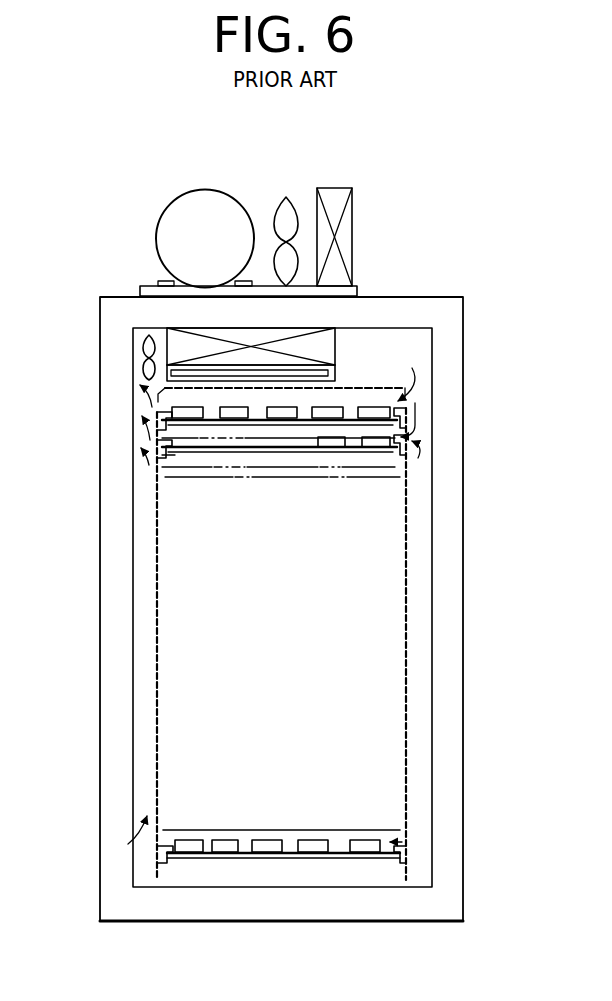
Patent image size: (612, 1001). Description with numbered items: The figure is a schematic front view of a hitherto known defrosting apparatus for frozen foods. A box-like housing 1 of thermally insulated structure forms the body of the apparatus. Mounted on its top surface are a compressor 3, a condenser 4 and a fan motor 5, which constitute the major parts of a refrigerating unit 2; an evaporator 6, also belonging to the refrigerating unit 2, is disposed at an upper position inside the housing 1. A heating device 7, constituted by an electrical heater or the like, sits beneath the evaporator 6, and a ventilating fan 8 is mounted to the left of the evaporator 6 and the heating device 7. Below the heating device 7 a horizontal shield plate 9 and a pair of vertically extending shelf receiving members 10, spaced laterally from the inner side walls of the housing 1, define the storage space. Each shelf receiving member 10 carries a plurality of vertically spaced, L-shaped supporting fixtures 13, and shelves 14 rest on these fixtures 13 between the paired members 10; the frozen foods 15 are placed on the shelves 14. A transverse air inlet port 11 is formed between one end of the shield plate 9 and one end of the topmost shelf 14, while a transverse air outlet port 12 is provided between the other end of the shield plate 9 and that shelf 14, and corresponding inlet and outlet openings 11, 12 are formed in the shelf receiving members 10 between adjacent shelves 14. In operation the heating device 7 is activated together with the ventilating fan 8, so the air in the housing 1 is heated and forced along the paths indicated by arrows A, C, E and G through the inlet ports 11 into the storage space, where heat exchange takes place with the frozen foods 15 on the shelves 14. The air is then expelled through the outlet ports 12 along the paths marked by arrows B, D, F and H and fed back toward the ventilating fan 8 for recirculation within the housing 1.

The housing 1 is at (425, 296).
The refrigerating unit 2 is at (362, 209).
The compressor 3 is at (199, 199).
The condenser 4 is at (338, 189).
The fan motor 5 is at (290, 206).
The evaporator 6 is at (177, 347).
The heating device 7 is at (313, 371).
The ventilating fan 8 is at (143, 348).
The shield plate 9 is at (372, 388).
The shelf receiving member 10 is at (156, 706).
The air inlet port 11 is at (405, 394).
The air outlet port 12 is at (155, 411).
The supporting fixture 13 is at (170, 456).
The shelf 14 is at (222, 450).
The frozen food 15 is at (238, 410).
The hot air flow path A is at (412, 368).
The return air flow path B is at (136, 393).
The hot air flow path C is at (418, 417).
The return air flow path D is at (147, 440).
The hot air flow path E is at (418, 457).
The return air flow path F is at (142, 465).
The hot air flow path G is at (414, 838).
The return air flow path H is at (128, 844).